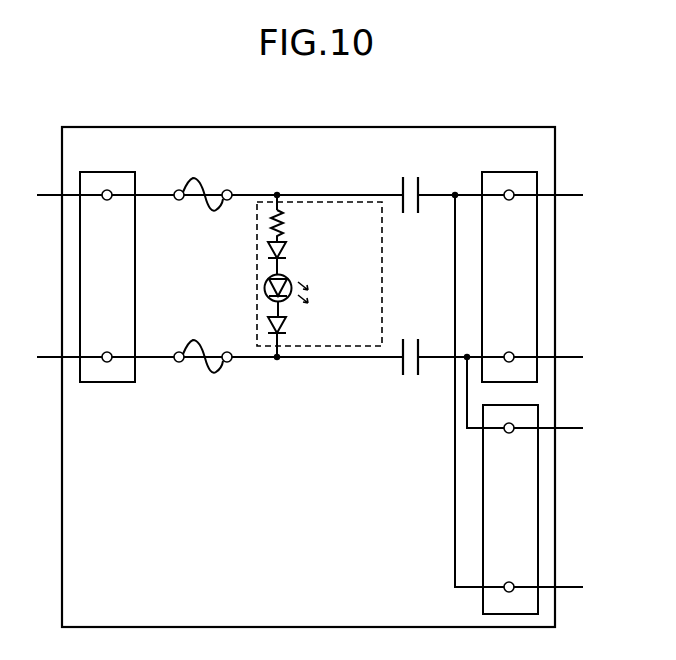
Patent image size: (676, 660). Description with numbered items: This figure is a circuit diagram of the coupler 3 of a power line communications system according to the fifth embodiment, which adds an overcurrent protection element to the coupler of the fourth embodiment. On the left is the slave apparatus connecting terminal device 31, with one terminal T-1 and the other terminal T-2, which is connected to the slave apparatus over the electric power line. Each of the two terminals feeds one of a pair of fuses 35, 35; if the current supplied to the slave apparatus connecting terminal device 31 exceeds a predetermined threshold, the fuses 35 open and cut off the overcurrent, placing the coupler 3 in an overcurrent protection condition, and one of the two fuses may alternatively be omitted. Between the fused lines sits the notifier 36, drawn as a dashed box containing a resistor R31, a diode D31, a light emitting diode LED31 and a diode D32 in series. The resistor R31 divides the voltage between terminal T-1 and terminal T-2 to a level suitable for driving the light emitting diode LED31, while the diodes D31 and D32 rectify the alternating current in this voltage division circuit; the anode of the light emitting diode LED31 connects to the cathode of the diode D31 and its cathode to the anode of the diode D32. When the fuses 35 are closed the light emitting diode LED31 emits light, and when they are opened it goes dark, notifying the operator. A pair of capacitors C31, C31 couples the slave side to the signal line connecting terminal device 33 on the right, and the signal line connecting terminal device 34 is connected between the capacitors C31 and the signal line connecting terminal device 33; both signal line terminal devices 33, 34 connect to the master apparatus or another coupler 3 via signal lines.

The coupler 3 is at (303, 127).
The slave apparatus connecting terminal device 31 is at (113, 172).
The signal line connecting terminal device 33 is at (494, 172).
The signal line connecting terminal device 34 is at (483, 598).
The fuse 35 is at (193, 178).
The notifier 36 is at (345, 202).
The terminal T-1 is at (107, 200).
The terminal T-2 is at (107, 352).
The resistor R31 is at (304, 226).
The diode D31 is at (303, 256).
The light emitting diode LED31 is at (319, 291).
The diode D32 is at (303, 337).
The capacitor C31 is at (409, 292).